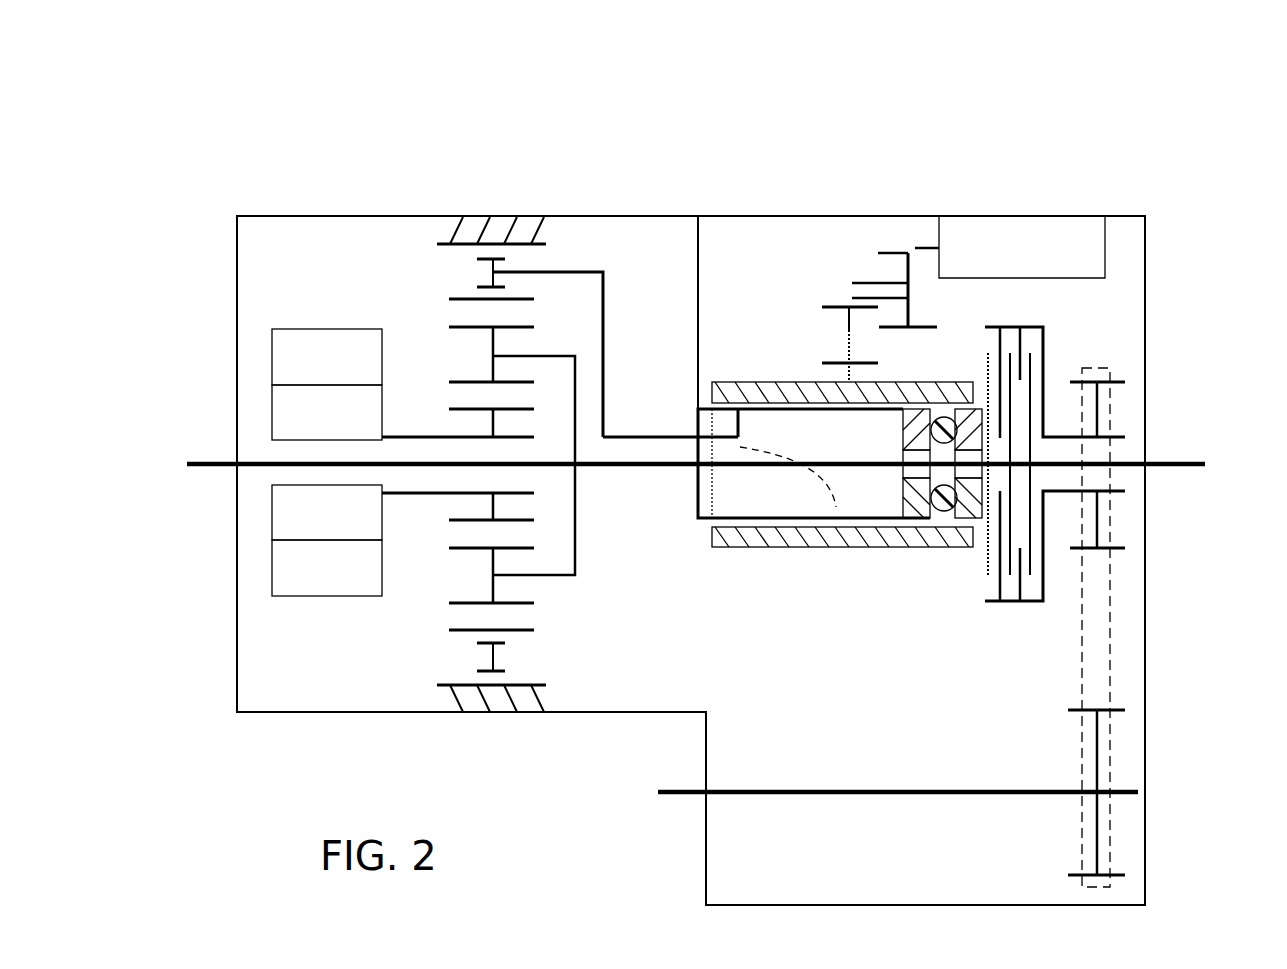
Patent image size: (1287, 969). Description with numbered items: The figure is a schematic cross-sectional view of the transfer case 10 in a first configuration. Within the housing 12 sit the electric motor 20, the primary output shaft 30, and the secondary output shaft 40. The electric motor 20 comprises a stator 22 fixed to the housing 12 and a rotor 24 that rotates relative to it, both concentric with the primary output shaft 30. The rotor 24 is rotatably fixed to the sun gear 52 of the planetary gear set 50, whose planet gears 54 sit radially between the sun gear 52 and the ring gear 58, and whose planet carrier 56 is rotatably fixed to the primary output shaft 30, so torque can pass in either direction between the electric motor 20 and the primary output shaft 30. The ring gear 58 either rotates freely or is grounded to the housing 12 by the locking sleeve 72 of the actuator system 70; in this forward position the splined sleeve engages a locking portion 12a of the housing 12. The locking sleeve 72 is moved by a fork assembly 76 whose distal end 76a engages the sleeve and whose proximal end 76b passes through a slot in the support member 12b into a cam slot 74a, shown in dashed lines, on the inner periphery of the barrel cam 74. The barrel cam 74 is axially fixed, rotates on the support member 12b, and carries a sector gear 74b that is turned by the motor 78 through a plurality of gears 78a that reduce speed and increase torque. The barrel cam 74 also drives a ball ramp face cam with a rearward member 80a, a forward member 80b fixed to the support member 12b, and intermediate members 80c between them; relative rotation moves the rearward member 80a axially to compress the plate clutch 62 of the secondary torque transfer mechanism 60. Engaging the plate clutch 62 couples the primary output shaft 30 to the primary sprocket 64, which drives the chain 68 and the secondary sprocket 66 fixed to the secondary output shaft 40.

The transfer case 10 is at (185, 118).
The housing 12 is at (828, 217).
The locking portion 12a is at (490, 243).
The support member 12b is at (698, 260).
The electric motor 20 is at (308, 377).
The stator 22 is at (328, 359).
The rotor 24 is at (328, 414).
The primary output shaft 30 is at (208, 460).
The secondary output shaft 40 is at (672, 796).
The planetary gear set 50 is at (515, 439).
The sun gear 52 is at (465, 522).
The planet gears 54 is at (533, 605).
The planet carrier 56 is at (563, 577).
The ring gear 58 is at (462, 632).
The secondary torque transfer mechanism 60 is at (1005, 645).
The plate clutch 62 is at (1043, 340).
The primary sprocket 64 is at (1115, 383).
The secondary sprocket 66 is at (1120, 710).
The chain 68 is at (1110, 600).
The actuator system 70 is at (750, 300).
The locking sleeve 72 is at (485, 242).
The barrel cam 74 is at (835, 483).
The cam slot 74a is at (836, 508).
The sector gear 74b is at (820, 363).
The fork assembly 76 is at (607, 345).
The distal end 76a is at (553, 272).
The proximal end 76b is at (738, 425).
The motor 78 is at (963, 215).
The gears 78a is at (905, 250).
The rearward member 80a is at (968, 548).
The forward member 80b is at (918, 548).
The intermediate members 80c is at (945, 512).